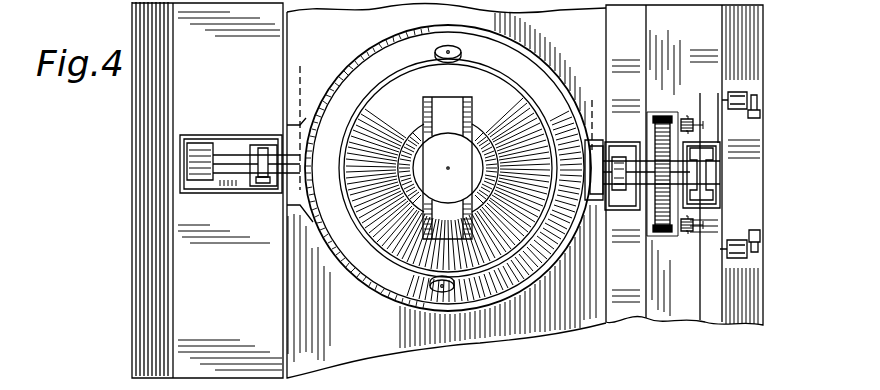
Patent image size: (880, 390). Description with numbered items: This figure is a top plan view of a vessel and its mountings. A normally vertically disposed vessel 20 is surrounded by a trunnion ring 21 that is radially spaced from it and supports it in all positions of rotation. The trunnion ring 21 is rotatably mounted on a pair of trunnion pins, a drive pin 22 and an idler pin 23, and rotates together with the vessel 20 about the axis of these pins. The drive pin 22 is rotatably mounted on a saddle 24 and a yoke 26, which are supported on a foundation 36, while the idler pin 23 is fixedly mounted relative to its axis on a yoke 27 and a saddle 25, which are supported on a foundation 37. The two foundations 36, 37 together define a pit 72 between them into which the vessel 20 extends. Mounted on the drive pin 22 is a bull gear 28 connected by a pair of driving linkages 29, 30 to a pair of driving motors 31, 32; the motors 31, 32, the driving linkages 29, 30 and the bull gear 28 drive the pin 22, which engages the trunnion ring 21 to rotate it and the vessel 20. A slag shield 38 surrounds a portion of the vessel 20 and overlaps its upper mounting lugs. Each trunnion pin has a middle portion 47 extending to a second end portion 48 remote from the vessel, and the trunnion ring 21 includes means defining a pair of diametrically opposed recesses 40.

The vessel 20 is at (448, 168).
The trunnion ring 21 is at (542, 56).
The drive pin 22 is at (652, 170).
The idler pin 23 is at (256, 162).
The saddle 24 is at (618, 157).
The saddle 25 is at (263, 148).
The yoke 26 is at (708, 171).
The yoke 27 is at (200, 152).
The bull gear 28 is at (656, 222).
The driving linkage 29 is at (686, 117).
The driving linkage 30 is at (682, 241).
The driving motor 31 is at (745, 96).
The driving motor 32 is at (740, 258).
The foundation 36 is at (641, 40).
The foundation 37 is at (228, 307).
The slag shield 38 is at (551, 267).
The recess 40 is at (446, 114).
The middle portion 47 is at (684, 120).
The second end portion 48 is at (708, 182).
The pit 72 is at (346, 328).